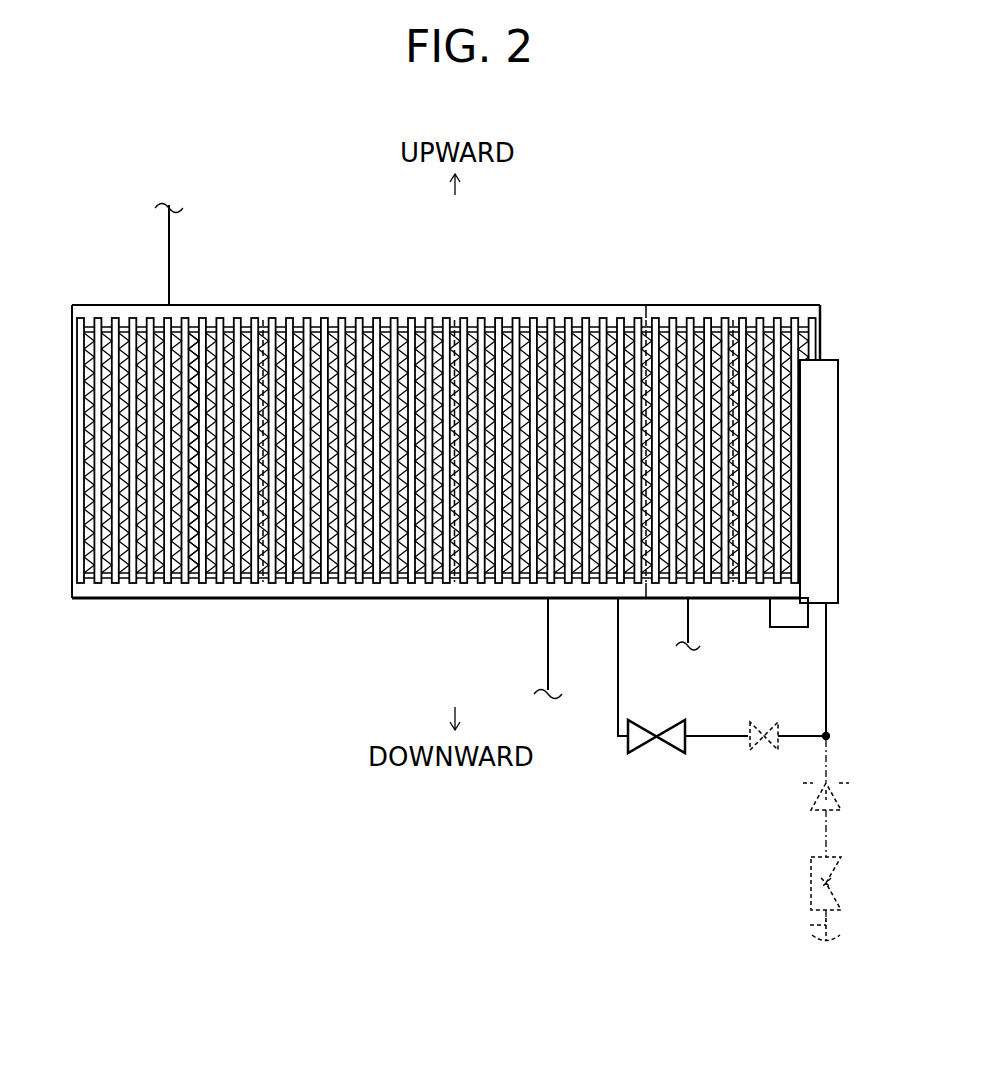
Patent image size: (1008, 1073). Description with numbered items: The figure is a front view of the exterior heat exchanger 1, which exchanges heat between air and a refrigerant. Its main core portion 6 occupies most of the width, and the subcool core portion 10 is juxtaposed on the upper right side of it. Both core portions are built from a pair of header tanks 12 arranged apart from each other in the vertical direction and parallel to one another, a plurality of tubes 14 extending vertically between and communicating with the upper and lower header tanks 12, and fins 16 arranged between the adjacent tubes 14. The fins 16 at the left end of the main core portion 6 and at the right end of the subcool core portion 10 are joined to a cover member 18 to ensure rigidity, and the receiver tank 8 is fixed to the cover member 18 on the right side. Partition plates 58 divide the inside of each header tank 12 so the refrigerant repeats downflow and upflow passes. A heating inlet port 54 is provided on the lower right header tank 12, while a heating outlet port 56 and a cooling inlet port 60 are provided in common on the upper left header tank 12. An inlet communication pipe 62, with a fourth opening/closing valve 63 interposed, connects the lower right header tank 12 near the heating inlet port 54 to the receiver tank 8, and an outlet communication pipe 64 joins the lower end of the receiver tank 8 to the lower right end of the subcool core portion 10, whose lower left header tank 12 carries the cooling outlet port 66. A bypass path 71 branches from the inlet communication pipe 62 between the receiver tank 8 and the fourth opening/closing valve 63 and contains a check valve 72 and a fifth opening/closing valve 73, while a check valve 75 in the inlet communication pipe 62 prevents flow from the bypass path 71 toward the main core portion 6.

The exterior heat exchanger 1 is at (468, 447).
The main core portion 6 is at (446, 462).
The receiver tank 8 is at (828, 463).
The subcool core portion 10 is at (706, 315).
The header tank 12 is at (508, 310).
The tube 14 is at (185, 590).
The fin 16 is at (193, 586).
The cover member 18 is at (72, 362).
The heating inlet port 54 is at (548, 600).
The heating outlet port 56 is at (133, 255).
The cooling inlet port 60 is at (169, 302).
The partition plate 58 is at (263, 320).
The inlet communication pipe 62 is at (710, 740).
The fourth opening/closing valve 63 is at (632, 756).
The outlet communication pipe 64 is at (788, 628).
The cooling outlet port 66 is at (686, 604).
The bypass path 71 is at (808, 932).
The check valve 72 is at (814, 810).
The fifth opening/closing valve 73 is at (810, 878).
The check valve 75 is at (760, 752).